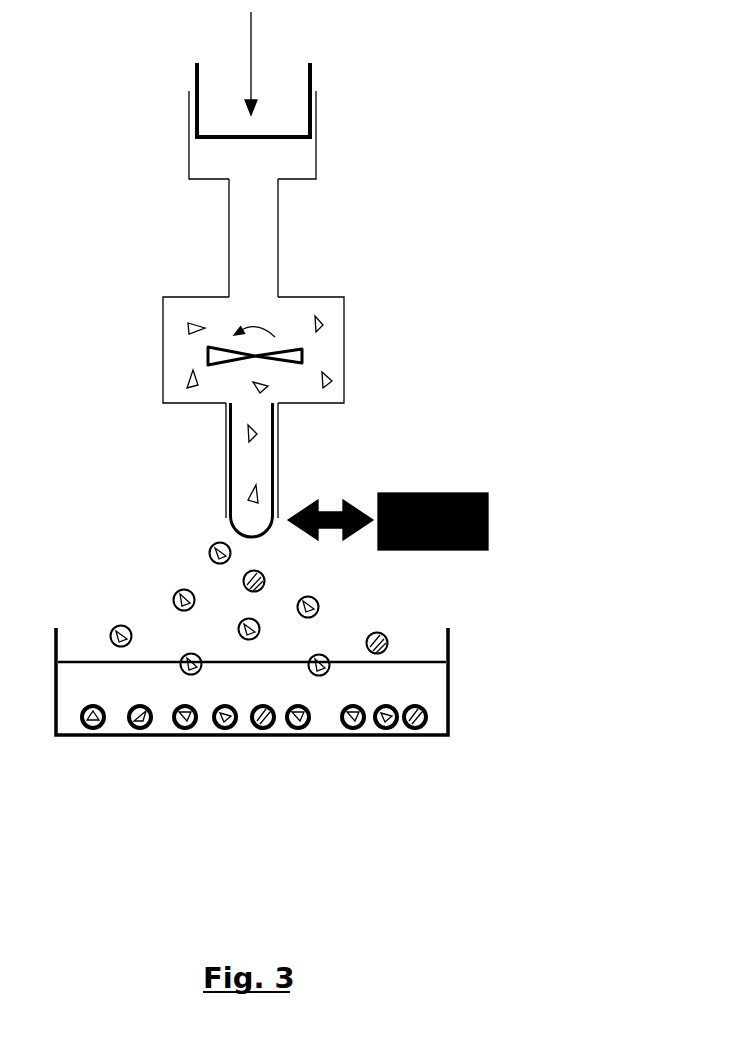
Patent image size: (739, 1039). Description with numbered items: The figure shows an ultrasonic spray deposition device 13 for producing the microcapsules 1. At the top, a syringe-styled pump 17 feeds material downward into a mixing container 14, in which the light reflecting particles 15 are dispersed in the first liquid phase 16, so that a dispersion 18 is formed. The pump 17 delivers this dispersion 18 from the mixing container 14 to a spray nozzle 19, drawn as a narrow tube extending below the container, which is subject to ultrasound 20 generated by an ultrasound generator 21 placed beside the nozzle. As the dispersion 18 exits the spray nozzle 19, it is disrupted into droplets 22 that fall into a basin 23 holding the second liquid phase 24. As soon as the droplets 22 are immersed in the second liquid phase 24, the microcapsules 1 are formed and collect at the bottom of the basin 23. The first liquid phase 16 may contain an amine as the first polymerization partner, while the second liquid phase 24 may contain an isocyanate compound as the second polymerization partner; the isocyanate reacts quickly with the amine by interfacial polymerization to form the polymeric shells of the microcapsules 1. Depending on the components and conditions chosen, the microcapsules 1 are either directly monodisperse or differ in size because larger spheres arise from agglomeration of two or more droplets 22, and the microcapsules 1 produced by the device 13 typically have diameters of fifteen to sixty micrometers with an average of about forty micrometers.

The microcapsules 1 is at (225, 728).
The ultrasonic spray deposition device 13 is at (310, 291).
The mixing container 14 is at (360, 322).
The light reflecting particles 15 is at (322, 330).
The first liquid phase 16 is at (246, 267).
The syringe-styled pump 17 is at (176, 97).
The dispersion 18 is at (243, 440).
The spray nozzle 19 is at (215, 491).
The ultrasound 20 is at (333, 496).
The ultrasound generator 21 is at (488, 517).
The droplets 22 is at (210, 552).
The basin 23 is at (448, 686).
The second liquid phase 24 is at (334, 770).